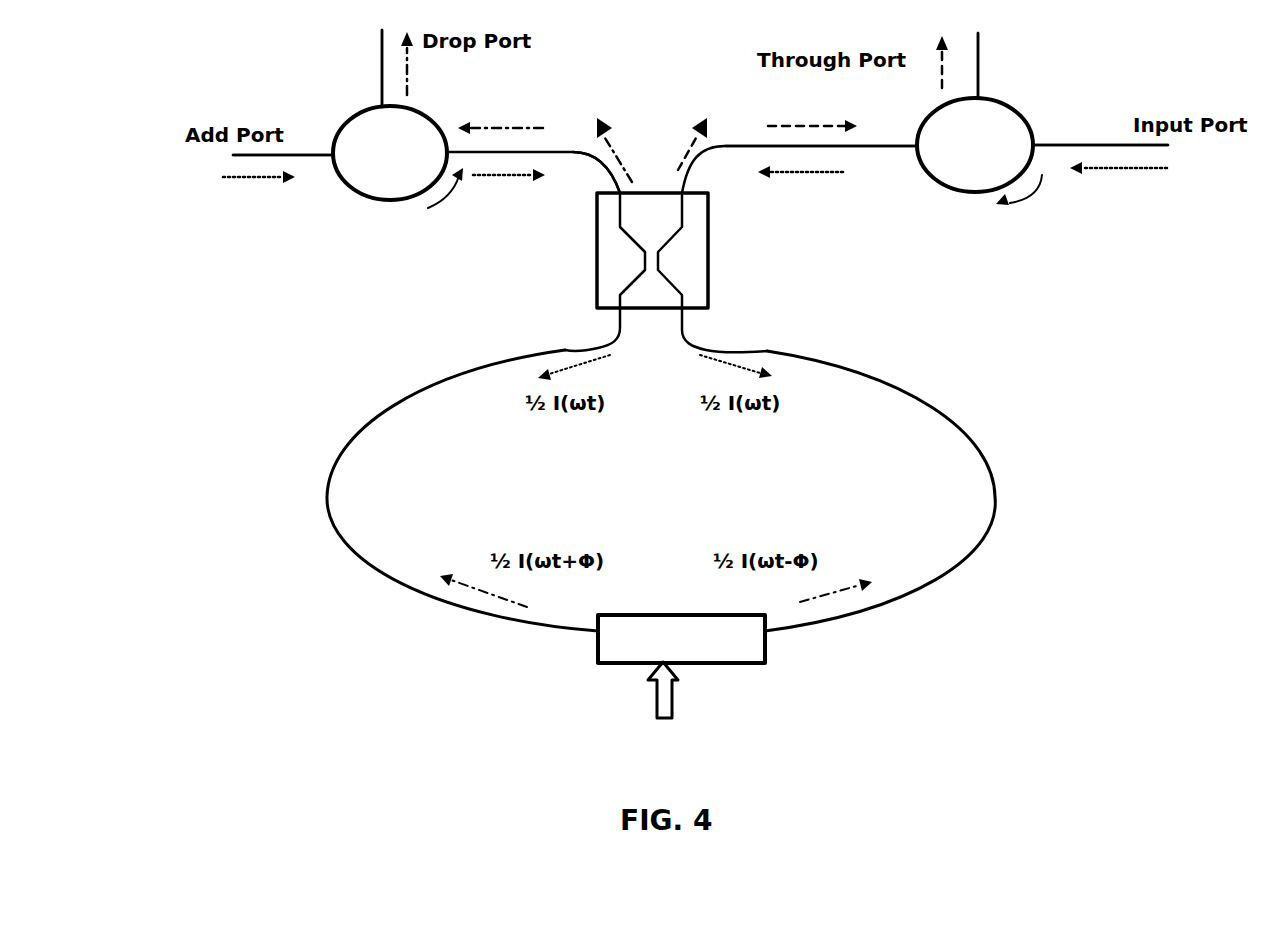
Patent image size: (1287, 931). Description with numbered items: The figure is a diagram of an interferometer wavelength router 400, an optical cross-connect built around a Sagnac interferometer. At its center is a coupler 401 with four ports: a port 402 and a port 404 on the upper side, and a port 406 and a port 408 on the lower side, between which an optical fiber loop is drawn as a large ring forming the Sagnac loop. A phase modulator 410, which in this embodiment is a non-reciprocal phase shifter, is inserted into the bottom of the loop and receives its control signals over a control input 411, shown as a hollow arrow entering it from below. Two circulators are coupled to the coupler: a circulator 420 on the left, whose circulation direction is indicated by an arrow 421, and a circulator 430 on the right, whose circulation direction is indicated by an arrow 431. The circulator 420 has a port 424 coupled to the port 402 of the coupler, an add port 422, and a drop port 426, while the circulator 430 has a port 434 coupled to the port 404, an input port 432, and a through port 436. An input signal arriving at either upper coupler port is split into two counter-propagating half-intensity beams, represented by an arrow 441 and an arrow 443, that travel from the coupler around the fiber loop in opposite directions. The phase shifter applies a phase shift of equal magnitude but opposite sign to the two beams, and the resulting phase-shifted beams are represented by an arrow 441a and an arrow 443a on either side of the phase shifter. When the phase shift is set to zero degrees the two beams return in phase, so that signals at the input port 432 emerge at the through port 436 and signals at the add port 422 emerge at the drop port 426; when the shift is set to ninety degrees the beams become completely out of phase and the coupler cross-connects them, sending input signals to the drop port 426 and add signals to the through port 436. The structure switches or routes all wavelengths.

The interferometer wavelength router 400 is at (328, 613).
The coupler 401 is at (695, 287).
The port 402 is at (610, 185).
The port 404 is at (672, 187).
The port 406 is at (608, 312).
The port 408 is at (687, 310).
The phase modulator 410 is at (737, 638).
The control input 411 is at (672, 712).
The circulator 420 is at (372, 177).
The arrow 421 is at (438, 207).
The add port 422 is at (333, 158).
The port 424 is at (447, 143).
The drop port 426 is at (380, 105).
The circulator 430 is at (980, 172).
The arrow 431 is at (1033, 195).
The input port 432 is at (1040, 142).
The port 434 is at (908, 147).
The through port 436 is at (987, 98).
The arrow 441 is at (585, 368).
The arrow 443 is at (698, 355).
The arrow 441a is at (825, 593).
The arrow 443a is at (500, 597).